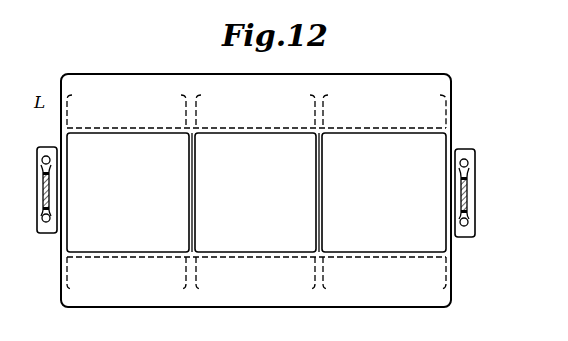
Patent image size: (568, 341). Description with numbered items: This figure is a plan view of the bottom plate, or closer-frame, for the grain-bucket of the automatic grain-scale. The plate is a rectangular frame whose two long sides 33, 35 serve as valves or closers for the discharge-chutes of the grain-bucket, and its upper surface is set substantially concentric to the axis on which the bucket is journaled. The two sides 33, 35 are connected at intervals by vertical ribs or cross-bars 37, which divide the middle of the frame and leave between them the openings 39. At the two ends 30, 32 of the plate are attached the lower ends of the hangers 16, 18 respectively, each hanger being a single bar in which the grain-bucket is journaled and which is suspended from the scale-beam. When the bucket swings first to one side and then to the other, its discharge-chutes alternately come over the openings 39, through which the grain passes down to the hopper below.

The side of bottom plate 35 is at (289, 87).
The side of bottom plate 33 is at (372, 300).
The vertical ribs or cross-bars 37 is at (188, 206).
The openings 39 is at (355, 235).
The hanger 18 is at (43, 197).
The hanger 16 is at (468, 190).
The end of bottom plate 32 is at (62, 237).
The end of bottom plate 30 is at (450, 242).